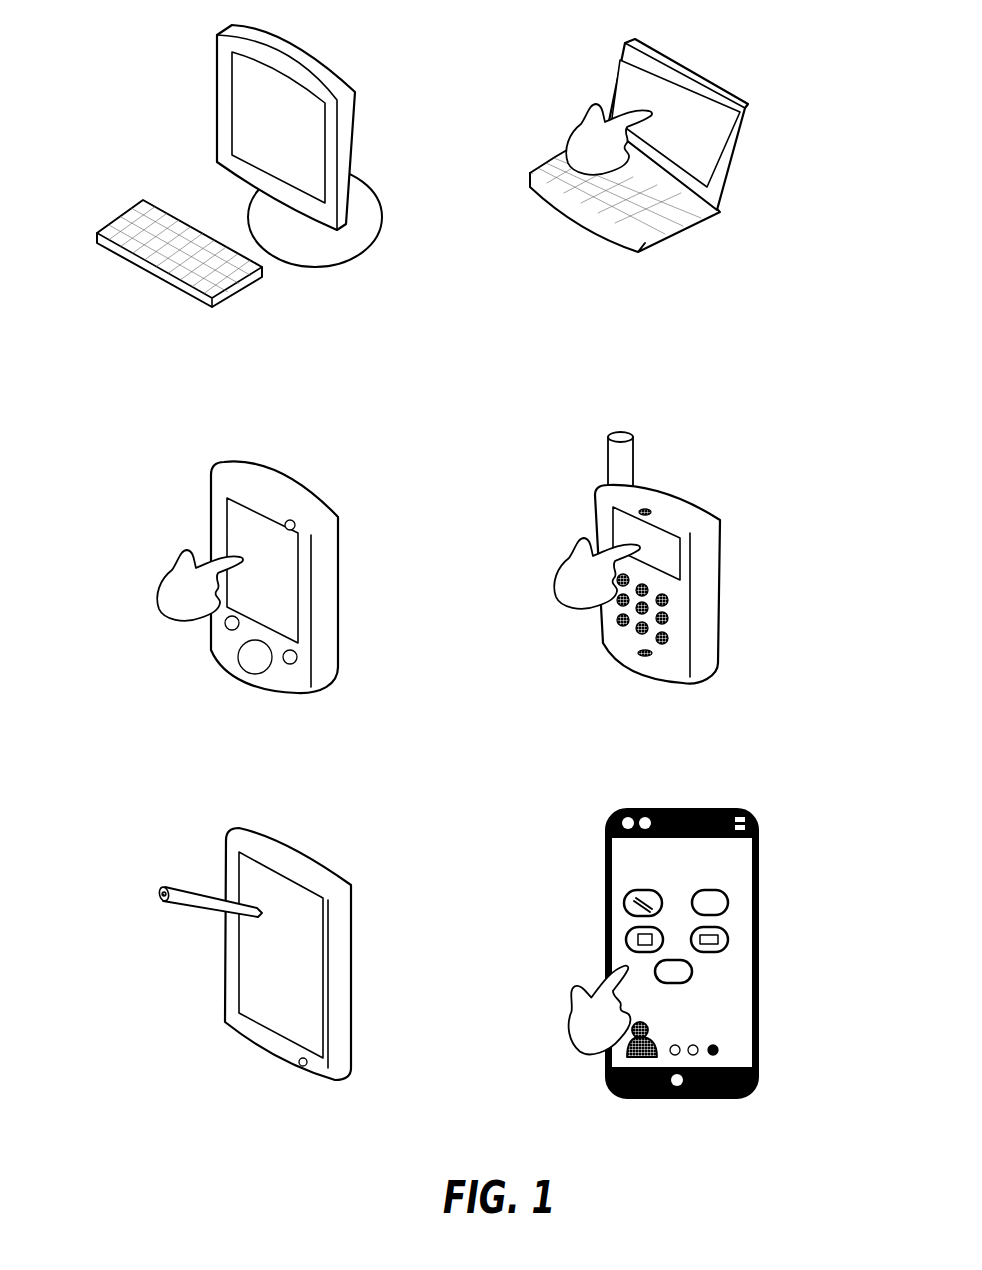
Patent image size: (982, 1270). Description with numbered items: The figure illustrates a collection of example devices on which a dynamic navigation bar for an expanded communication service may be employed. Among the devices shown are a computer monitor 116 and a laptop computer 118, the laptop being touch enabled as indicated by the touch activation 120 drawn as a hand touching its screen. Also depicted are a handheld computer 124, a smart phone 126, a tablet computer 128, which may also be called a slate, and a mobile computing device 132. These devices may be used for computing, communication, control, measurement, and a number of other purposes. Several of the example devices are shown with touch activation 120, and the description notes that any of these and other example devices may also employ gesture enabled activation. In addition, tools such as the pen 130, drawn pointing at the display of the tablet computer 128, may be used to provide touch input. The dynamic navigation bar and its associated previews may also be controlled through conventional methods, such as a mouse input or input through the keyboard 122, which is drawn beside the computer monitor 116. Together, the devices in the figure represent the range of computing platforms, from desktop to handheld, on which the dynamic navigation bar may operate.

The computer monitor 116 is at (200, 32).
The laptop computer 118 is at (632, 34).
The touch activation 120 is at (577, 117).
The keyboard 122 is at (125, 200).
The handheld computer 124 is at (200, 447).
The smart phone 126 is at (580, 454).
The tablet computer 128 is at (248, 811).
The pen 130 is at (175, 870).
The mobile computing device 132 is at (630, 797).